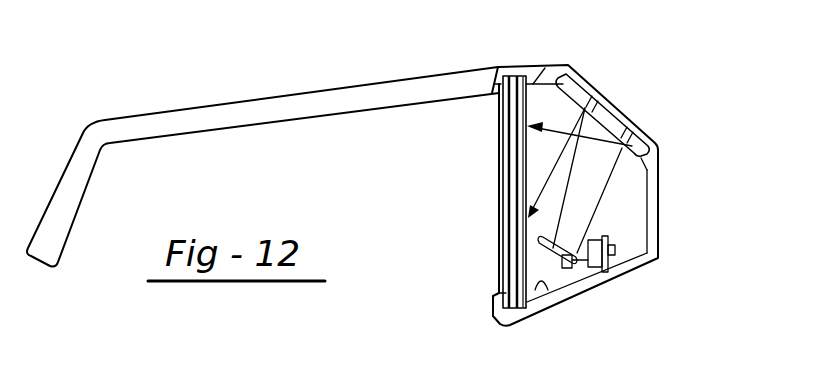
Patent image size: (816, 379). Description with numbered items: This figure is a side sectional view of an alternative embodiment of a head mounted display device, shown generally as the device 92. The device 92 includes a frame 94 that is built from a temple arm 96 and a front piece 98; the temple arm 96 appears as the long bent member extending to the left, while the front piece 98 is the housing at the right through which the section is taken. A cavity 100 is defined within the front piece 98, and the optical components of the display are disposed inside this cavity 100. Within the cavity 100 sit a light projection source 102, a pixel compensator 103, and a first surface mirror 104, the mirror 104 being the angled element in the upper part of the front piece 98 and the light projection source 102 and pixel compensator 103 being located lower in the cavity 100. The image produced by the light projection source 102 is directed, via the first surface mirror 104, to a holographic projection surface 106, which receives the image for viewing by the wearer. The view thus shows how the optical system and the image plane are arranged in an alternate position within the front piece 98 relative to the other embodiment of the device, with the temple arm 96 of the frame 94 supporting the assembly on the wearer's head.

The device 92 is at (645, 92).
The frame 94 is at (660, 210).
The temple arm 96 is at (305, 102).
The front piece 98 is at (524, 75).
The cavity 100 is at (538, 282).
The light projection source 102 is at (620, 268).
The pixel compensator 103 is at (577, 264).
The first surface mirror 104 is at (585, 108).
The holographic projection surface 106 is at (525, 180).